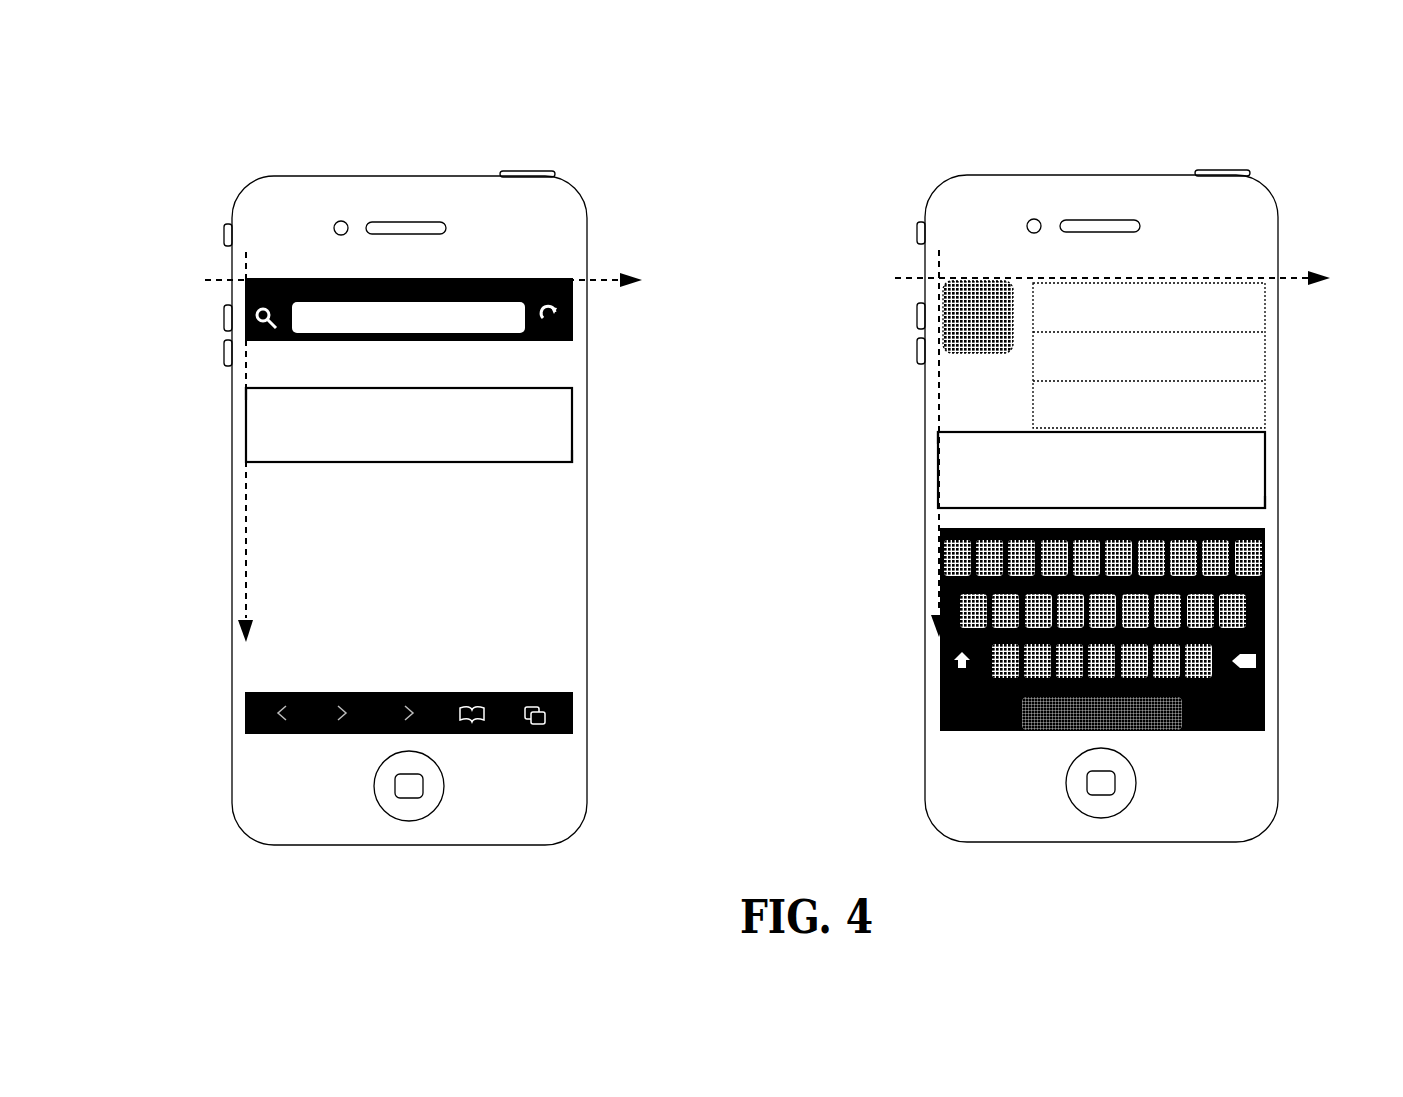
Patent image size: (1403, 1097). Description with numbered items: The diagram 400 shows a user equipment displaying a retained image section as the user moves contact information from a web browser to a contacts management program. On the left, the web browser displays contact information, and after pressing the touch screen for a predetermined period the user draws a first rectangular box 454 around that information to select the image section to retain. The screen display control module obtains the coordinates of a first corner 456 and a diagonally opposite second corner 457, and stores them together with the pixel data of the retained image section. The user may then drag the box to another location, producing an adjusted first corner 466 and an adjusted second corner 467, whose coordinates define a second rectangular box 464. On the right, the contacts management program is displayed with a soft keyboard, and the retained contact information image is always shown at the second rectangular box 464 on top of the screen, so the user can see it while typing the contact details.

The diagram 400 is at (168, 133).
The first rectangular box 454 is at (268, 445).
The first corner 456 is at (246, 388).
The second corner 457 is at (572, 462).
The second rectangular box 464 is at (960, 480).
The adjusted first corner 466 is at (938, 432).
The adjusted second corner 467 is at (1266, 507).